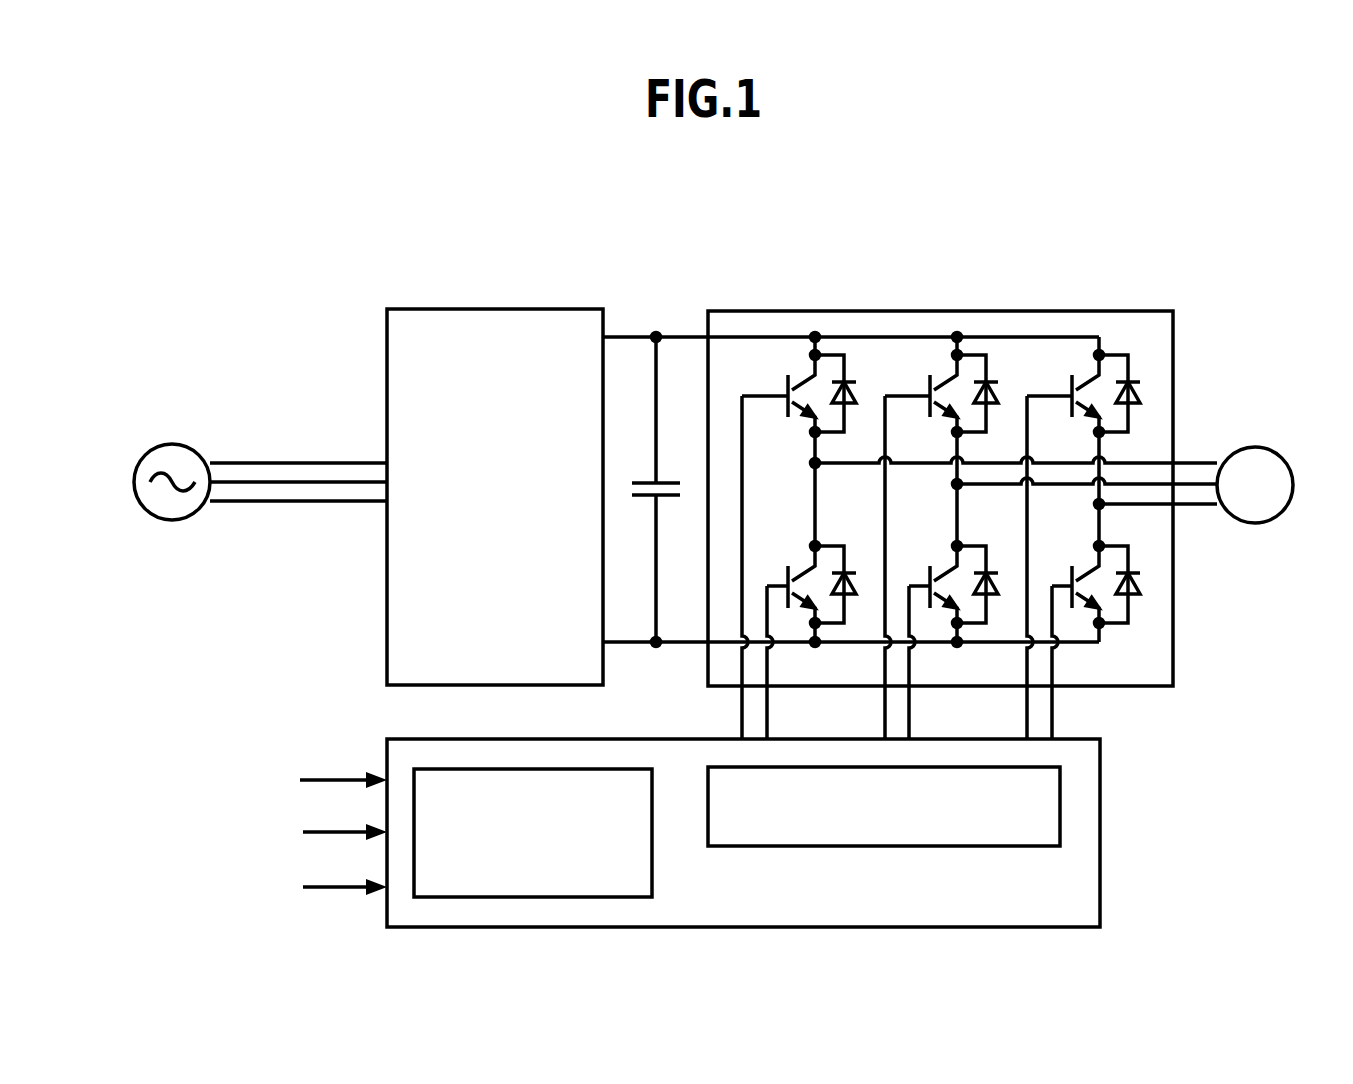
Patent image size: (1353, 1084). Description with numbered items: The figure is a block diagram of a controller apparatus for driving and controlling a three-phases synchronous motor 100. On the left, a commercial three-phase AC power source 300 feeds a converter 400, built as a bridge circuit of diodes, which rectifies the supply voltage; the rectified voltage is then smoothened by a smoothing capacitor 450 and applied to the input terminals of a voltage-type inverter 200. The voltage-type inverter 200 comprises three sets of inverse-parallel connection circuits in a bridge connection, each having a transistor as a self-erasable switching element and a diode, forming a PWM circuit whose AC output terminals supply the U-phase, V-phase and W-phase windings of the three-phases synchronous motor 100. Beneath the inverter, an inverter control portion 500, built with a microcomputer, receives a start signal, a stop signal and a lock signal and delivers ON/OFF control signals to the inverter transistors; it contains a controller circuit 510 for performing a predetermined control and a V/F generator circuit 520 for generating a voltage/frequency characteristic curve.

The three-phases synchronous motor 100 is at (1255, 446).
The voltage-type inverter 200 is at (927, 311).
The commercial three-phase AC power source 300 is at (181, 444).
The converter 400 is at (387, 340).
The smoothing capacitor 450 is at (644, 483).
The inverter control portion 500 is at (1100, 807).
The controller circuit 510 is at (652, 870).
The V/F generator circuit 520 is at (767, 847).